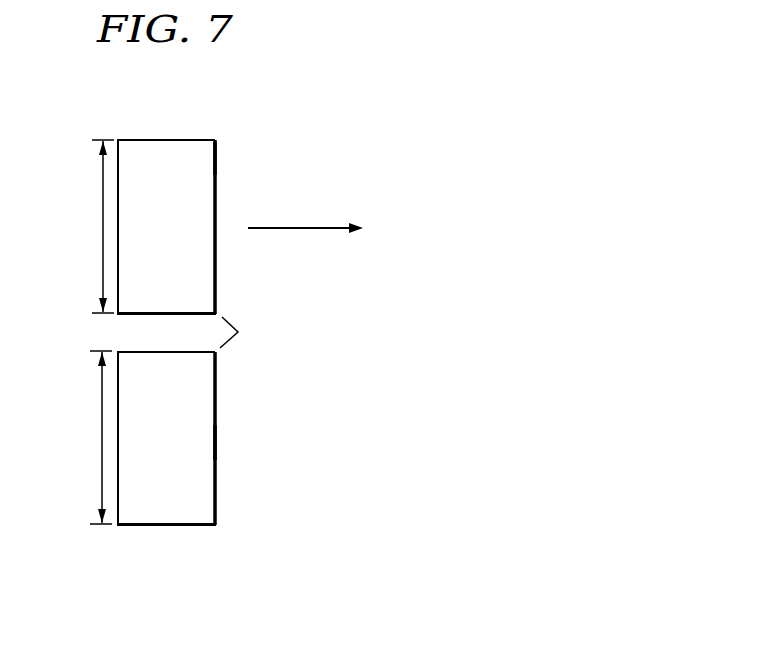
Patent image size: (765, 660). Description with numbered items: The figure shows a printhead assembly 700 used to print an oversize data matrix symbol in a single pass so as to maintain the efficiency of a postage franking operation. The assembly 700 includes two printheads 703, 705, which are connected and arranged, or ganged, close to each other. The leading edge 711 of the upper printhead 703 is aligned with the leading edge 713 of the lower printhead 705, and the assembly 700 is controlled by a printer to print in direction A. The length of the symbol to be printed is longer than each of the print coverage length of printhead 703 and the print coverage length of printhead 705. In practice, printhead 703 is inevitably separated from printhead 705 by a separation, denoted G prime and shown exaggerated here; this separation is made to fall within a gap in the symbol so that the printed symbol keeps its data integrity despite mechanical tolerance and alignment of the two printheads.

The printhead assembly 700 is at (183, 81).
The printhead 703 is at (166, 227).
The printhead 705 is at (166, 438).
The leading edge 711 is at (216, 157).
The leading edge 713 is at (216, 443).